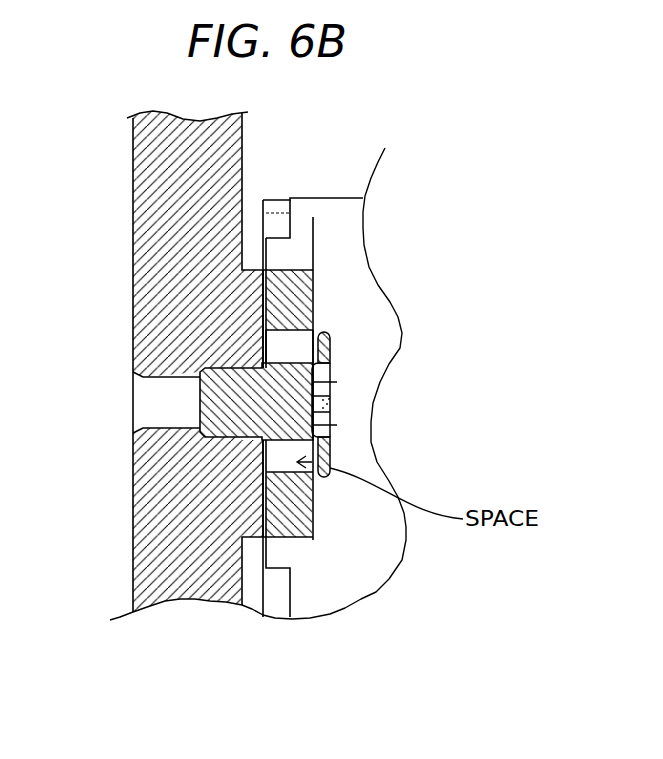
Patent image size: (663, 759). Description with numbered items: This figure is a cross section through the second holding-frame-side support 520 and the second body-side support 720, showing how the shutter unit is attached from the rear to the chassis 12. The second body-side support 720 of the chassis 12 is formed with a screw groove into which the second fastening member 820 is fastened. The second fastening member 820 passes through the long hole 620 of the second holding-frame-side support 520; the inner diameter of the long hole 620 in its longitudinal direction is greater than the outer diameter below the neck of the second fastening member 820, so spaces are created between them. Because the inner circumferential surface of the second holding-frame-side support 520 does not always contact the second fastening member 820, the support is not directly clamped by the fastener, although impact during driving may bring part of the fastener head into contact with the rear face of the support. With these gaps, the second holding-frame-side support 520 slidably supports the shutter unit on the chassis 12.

The chassis 12 is at (165, 170).
The second holding-frame-side support 520 is at (290, 507).
The long hole 620 is at (283, 345).
The second body-side support 720 is at (245, 332).
The second fastening member 820 is at (330, 344).